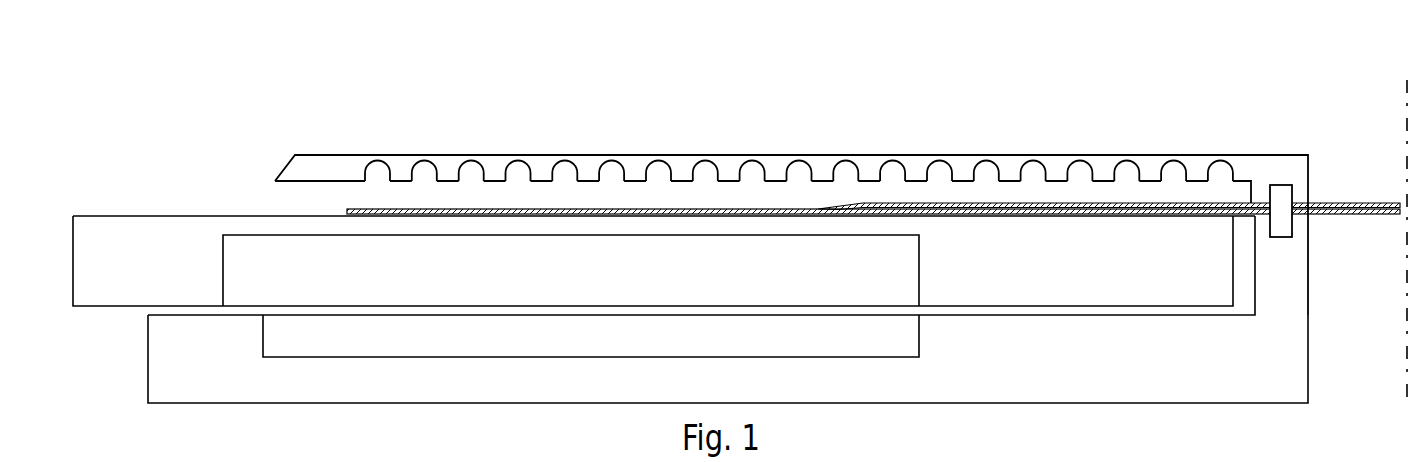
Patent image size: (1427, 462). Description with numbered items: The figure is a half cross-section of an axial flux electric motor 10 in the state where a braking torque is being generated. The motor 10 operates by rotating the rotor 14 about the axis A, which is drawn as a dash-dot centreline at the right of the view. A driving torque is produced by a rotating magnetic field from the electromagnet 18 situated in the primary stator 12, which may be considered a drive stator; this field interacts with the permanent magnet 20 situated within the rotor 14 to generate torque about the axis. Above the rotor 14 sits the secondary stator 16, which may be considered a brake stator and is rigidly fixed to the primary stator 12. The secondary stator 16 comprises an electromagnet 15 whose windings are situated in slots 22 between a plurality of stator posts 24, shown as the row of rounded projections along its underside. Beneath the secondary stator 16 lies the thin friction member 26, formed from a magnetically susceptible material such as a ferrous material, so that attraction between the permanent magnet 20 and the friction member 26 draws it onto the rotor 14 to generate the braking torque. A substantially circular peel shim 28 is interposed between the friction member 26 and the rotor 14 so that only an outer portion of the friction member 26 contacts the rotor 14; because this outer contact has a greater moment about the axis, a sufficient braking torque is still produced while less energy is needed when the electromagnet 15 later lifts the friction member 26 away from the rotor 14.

The electric motor 10 is at (103, 102).
The primary stator 12 is at (219, 374).
The rotor 14 is at (130, 282).
The electromagnet 15 is at (242, 163).
The secondary stator 16 is at (320, 167).
The electromagnet 18 is at (592, 351).
The permanent magnet 20 is at (592, 288).
The slots 22 is at (378, 172).
The stator posts 24 is at (447, 170).
The friction member 26 is at (745, 210).
The peel shim 28 is at (1343, 217).